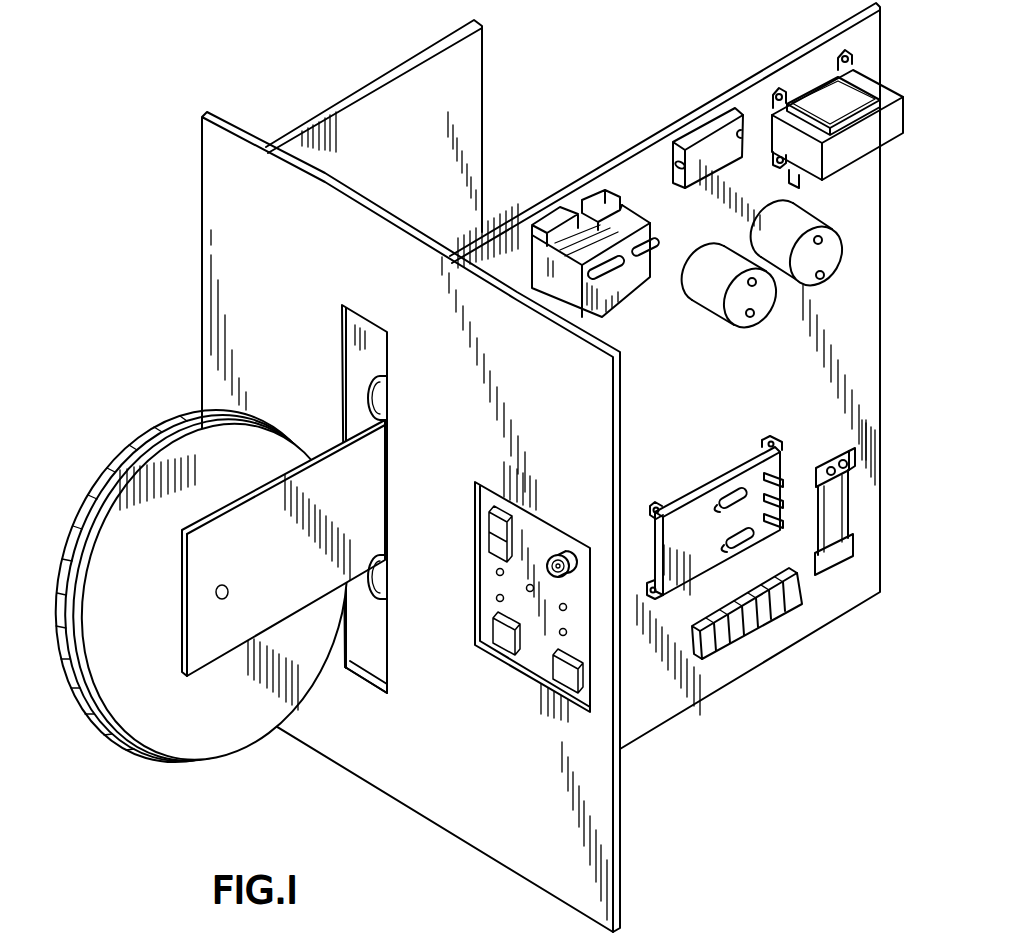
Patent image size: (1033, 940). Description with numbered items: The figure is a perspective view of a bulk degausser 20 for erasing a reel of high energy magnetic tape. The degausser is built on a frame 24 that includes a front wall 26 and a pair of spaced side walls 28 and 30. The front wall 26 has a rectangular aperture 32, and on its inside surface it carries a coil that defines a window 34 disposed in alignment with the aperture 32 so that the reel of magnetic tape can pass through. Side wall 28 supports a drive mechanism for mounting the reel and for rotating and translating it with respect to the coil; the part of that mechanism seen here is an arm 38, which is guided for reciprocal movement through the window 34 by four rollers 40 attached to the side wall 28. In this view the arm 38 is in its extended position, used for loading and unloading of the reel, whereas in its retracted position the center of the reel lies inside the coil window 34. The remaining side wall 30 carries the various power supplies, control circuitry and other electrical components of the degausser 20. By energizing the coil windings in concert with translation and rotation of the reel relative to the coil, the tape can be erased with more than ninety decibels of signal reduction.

The bulk degausser 20 is at (481, 469).
The frame 24 is at (574, 469).
The front wall 26 is at (532, 852).
The side wall 28 is at (484, 76).
The side wall 30 is at (864, 258).
The rectangular aperture 32 is at (377, 667).
The window 34 is at (375, 630).
The arm 38 is at (207, 615).
The rollers 40 is at (370, 590).